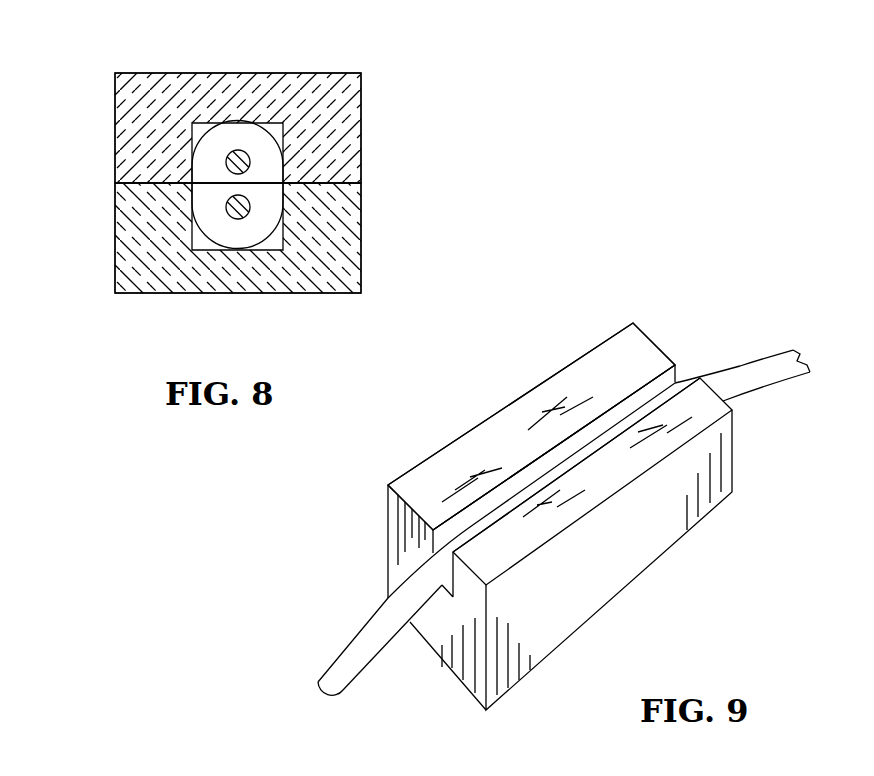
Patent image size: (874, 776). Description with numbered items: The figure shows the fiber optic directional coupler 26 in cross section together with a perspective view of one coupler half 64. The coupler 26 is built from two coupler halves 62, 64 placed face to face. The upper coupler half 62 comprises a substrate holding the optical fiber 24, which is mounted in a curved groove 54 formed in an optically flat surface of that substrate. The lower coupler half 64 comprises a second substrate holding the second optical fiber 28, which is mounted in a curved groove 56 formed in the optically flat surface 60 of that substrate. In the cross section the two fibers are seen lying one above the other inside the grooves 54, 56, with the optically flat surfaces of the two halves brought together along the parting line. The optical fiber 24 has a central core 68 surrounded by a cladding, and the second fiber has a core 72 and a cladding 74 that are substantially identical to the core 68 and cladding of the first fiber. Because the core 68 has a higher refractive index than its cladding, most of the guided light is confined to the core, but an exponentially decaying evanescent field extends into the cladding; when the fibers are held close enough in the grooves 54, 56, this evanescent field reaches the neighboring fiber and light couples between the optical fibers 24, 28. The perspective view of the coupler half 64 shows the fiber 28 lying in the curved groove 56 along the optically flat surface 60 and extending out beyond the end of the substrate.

In FIG. 8, the optical fiber 24 is at (192, 135).
In FIG. 8, the fiber optic directional coupler 26 is at (492, 132).
In FIG. 9, the optical fiber 28 is at (292, 668).
In FIG. 8, the curved groove 54 is at (283, 133).
In FIG. 8, the curved groove 56 is at (273, 247).
In FIG. 9, the curved groove 56 is at (676, 383).
In FIG. 9, the optically flat surface 60 is at (433, 473).
In FIG. 8, the coupler half 62 is at (412, 85).
In FIG. 8, the coupler half 64 is at (84, 82).
In FIG. 9, the coupler half 64 is at (322, 527).
In FIG. 8, the central core 68 is at (240, 150).
In FIG. 8, the core 72 is at (238, 219).
In FIG. 8, the cladding 74 is at (195, 248).